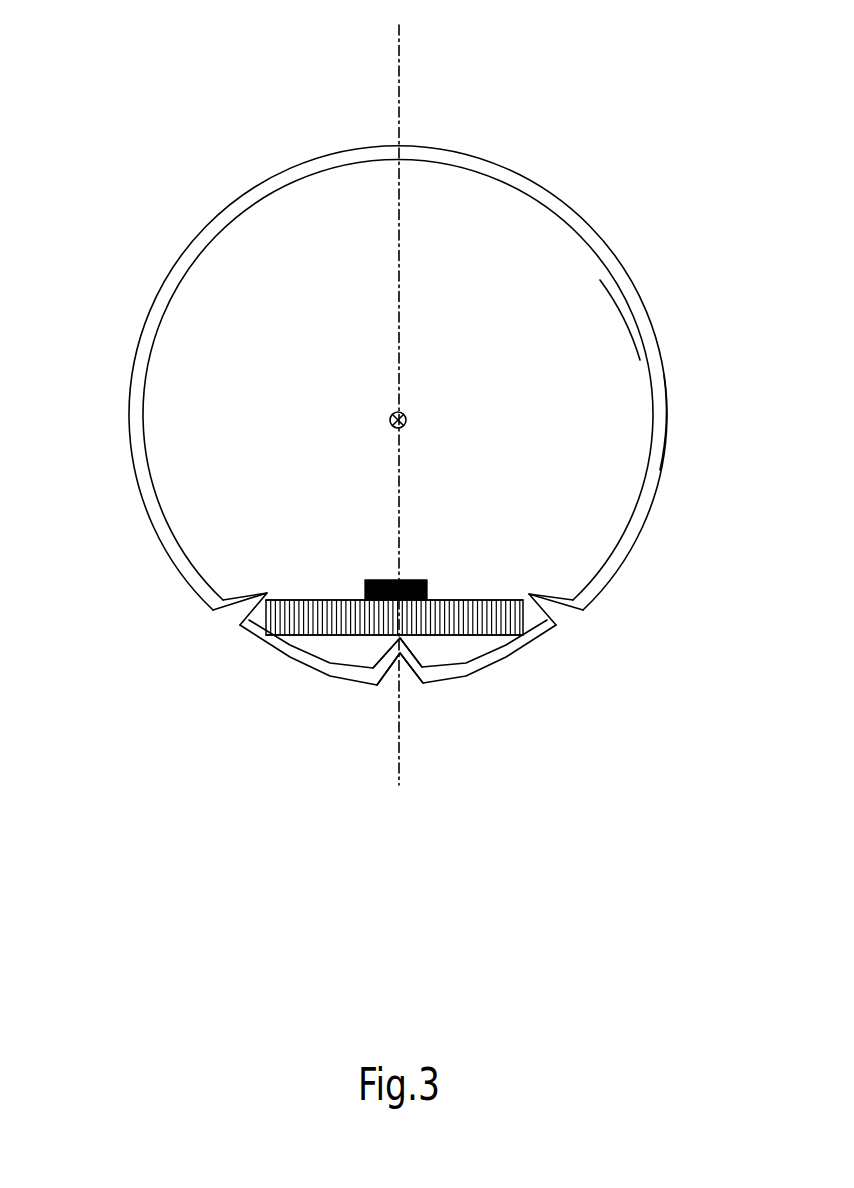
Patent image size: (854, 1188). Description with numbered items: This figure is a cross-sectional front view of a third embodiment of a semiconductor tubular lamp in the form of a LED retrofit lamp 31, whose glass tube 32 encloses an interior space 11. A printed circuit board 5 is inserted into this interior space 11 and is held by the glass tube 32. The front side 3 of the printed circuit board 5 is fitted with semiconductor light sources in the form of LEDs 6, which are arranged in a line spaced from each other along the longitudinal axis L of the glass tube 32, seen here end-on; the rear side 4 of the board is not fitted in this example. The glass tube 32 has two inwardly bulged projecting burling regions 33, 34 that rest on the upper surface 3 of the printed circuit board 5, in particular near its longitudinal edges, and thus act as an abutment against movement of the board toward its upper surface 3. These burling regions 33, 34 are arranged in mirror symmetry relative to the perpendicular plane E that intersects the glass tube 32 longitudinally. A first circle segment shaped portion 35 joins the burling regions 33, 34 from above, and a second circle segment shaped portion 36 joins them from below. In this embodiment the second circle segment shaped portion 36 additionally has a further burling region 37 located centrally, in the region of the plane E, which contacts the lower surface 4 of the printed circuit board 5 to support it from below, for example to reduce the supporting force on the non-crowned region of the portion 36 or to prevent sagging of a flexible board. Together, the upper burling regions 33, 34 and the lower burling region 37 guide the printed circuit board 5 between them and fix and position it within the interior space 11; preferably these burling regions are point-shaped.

The LED retrofit lamp 31 is at (385, 436).
The glass tube 32 is at (543, 198).
The first circle segment shaped portion 35 is at (657, 395).
The interior space 11 is at (615, 323).
The burling region 33 is at (230, 620).
The burling region 34 is at (558, 623).
The second circle segment shaped portion 36 is at (398, 690).
The further burling region 37 is at (395, 675).
The front side 3 is at (290, 600).
The rear side 4 is at (347, 637).
The printed circuit board 5 is at (498, 600).
The LED 6 is at (407, 580).
The perpendicular plane E is at (400, 53).
The longitudinal axis L is at (392, 413).